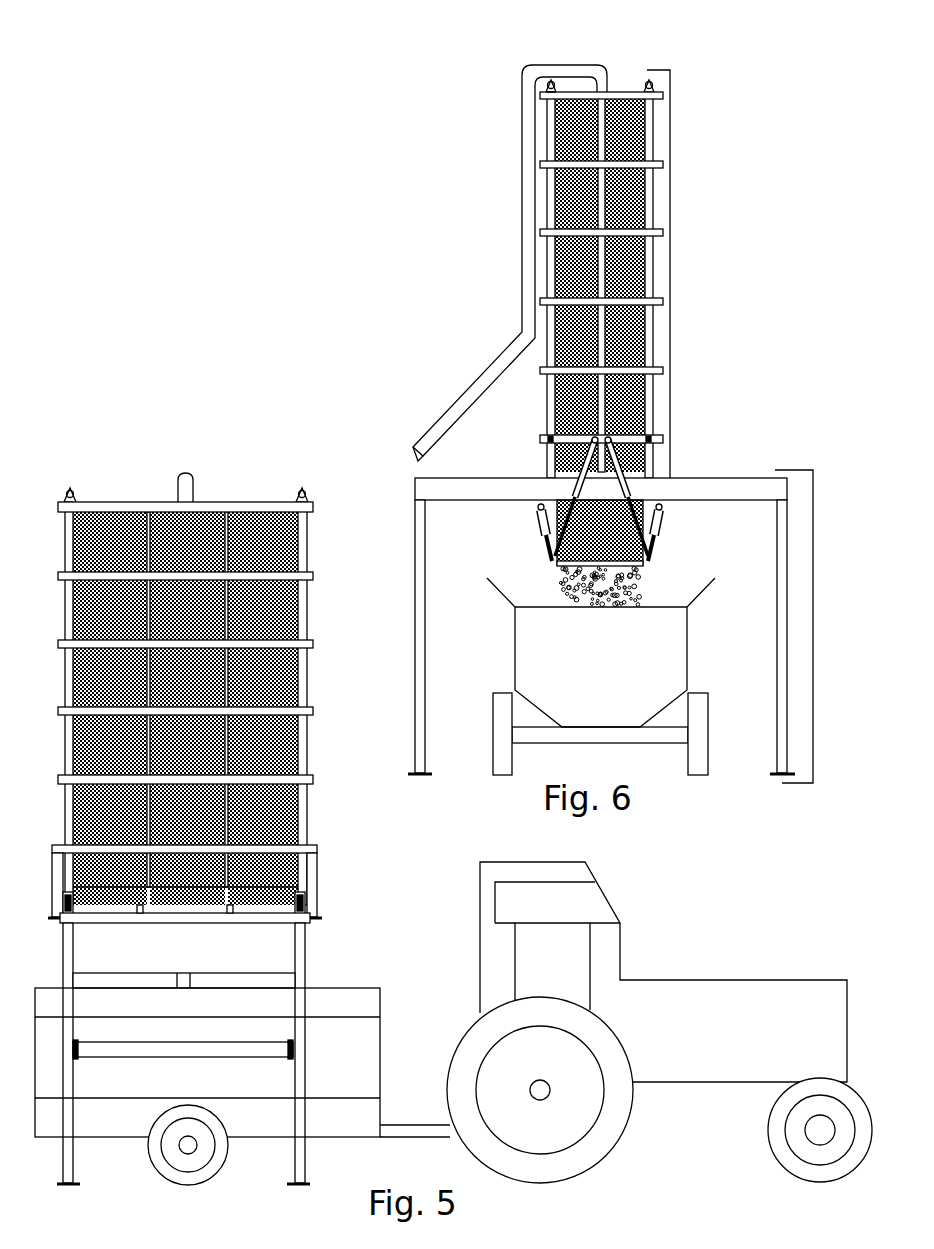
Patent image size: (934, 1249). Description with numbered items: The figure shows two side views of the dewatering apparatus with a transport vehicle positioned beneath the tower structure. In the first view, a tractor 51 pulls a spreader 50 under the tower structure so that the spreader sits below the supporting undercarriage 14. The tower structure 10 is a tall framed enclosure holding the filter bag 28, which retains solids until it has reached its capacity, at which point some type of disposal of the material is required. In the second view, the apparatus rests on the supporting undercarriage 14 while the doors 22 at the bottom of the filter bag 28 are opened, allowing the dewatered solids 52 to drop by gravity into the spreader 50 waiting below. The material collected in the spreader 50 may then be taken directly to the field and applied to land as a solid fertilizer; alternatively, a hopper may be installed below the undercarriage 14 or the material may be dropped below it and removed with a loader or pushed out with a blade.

In FIG. 6, the screening tower 10 is at (670, 280).
In FIG. 6, the supporting undercarriage 14 is at (813, 627).
In FIG. 6, the doors 22 is at (553, 547).
In FIG. 6, the filter bag 28 is at (605, 528).
In FIG. 6, the spreader 50 is at (537, 665).
In FIG. 5, the spreader 50 is at (320, 1000).
In FIG. 5, the tractor 51 is at (528, 980).
In FIG. 6, the dewatered solids 52 is at (648, 578).